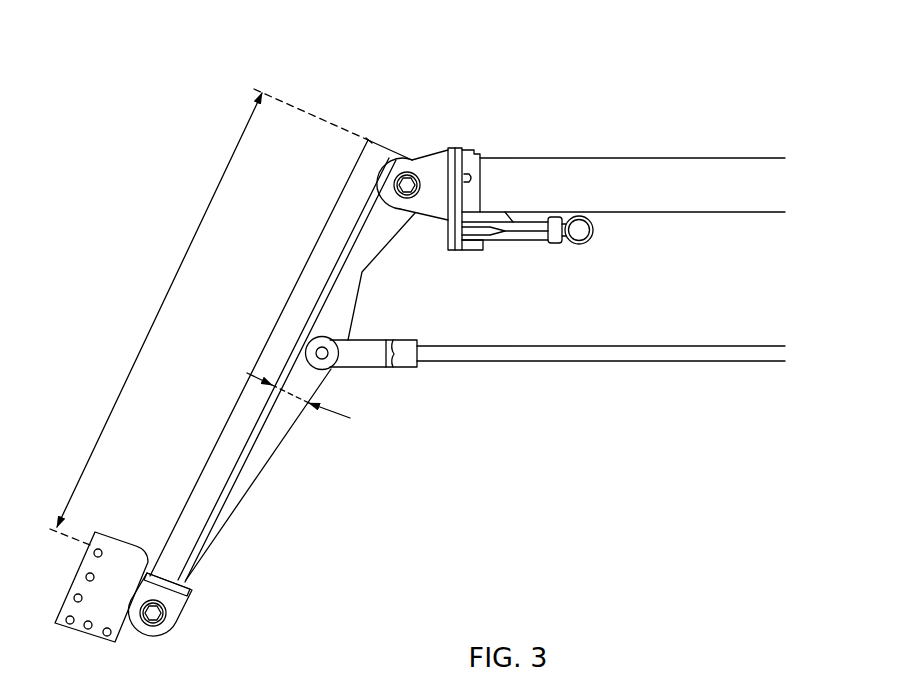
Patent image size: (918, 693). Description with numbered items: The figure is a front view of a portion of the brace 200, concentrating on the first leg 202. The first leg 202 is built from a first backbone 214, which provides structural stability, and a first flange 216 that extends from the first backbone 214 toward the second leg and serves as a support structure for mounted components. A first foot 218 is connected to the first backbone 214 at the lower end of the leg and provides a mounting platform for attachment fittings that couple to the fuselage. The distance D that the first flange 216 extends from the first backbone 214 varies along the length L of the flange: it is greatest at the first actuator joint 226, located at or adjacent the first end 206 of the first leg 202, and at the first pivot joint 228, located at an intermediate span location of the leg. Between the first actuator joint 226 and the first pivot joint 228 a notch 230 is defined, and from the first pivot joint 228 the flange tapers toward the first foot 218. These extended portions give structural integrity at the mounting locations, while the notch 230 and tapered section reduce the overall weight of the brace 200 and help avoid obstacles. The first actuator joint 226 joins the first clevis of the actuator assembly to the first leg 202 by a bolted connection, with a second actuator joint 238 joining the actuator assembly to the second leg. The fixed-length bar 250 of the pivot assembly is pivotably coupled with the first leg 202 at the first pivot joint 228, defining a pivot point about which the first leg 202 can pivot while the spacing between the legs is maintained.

The brace 200 is at (770, 107).
The first leg 202 is at (309, 267).
The first end 206 is at (361, 133).
The first backbone 214 is at (235, 430).
The first flange 216 is at (264, 461).
The first foot 218 is at (174, 611).
The first actuator joint 226 is at (414, 157).
The first pivot joint 228 is at (335, 368).
The notch 230 is at (367, 274).
The second actuator joint 238 is at (665, 170).
The bar 250 is at (668, 363).